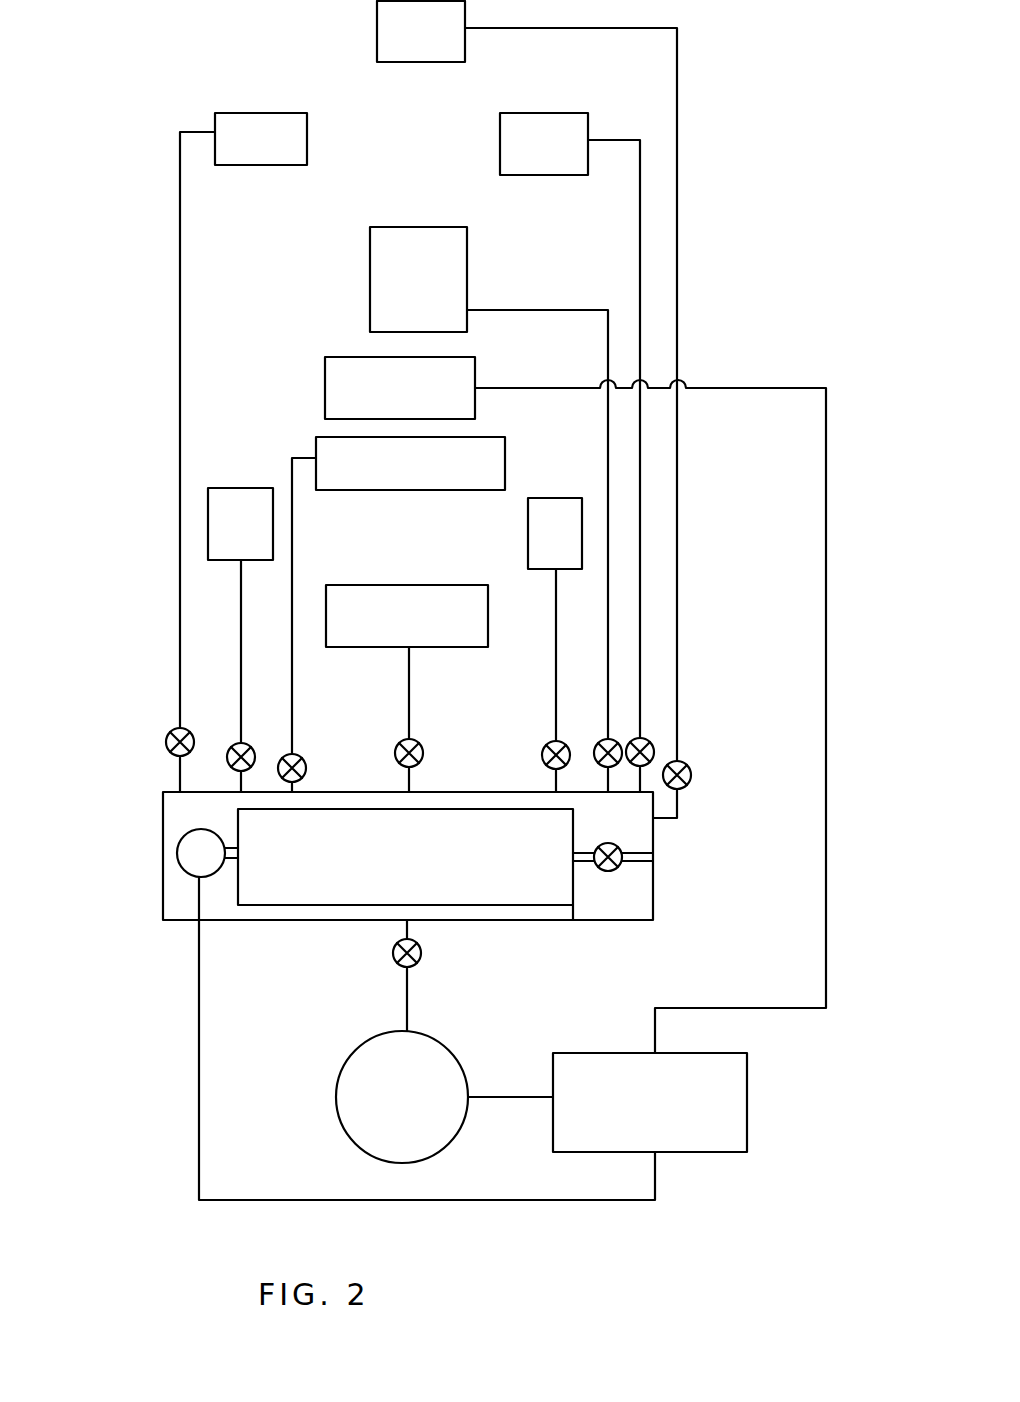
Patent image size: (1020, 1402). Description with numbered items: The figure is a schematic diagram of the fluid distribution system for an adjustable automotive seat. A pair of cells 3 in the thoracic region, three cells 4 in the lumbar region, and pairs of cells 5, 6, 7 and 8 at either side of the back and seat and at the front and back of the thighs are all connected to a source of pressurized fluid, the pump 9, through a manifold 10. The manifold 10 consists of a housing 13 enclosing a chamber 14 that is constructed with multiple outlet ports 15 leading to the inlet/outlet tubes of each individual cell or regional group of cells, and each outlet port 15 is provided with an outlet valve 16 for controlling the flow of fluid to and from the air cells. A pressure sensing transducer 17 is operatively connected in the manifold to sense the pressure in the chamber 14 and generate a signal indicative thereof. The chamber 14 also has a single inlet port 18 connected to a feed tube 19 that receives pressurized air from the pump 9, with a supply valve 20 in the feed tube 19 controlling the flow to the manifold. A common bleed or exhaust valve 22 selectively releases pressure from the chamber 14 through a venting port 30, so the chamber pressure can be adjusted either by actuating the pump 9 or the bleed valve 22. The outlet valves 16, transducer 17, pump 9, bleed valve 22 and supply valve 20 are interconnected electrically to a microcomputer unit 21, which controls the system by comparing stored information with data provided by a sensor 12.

The pair of cells 3 is at (406, 48).
The three cells 4 is at (404, 289).
The pair of cells 5 is at (247, 155).
The pair of cells 6 is at (227, 541).
The pair of cells 7 is at (396, 480).
The pair of cells 8 is at (393, 633).
The pump 9 is at (388, 1111).
The manifold 10 is at (682, 875).
The sensor 12 is at (335, 358).
The housing 13 is at (563, 913).
The chamber 14 is at (380, 868).
The outlet ports 15 is at (240, 780).
The outlet valve 16 is at (158, 742).
The pressure sensing transducer 17 is at (187, 868).
The inlet port 18 is at (405, 932).
The feed tube 19 is at (407, 1018).
The supply valve 20 is at (393, 960).
The microcomputer unit 21 is at (735, 1107).
The bleed valve 22 is at (613, 843).
The venting port 30 is at (655, 856).